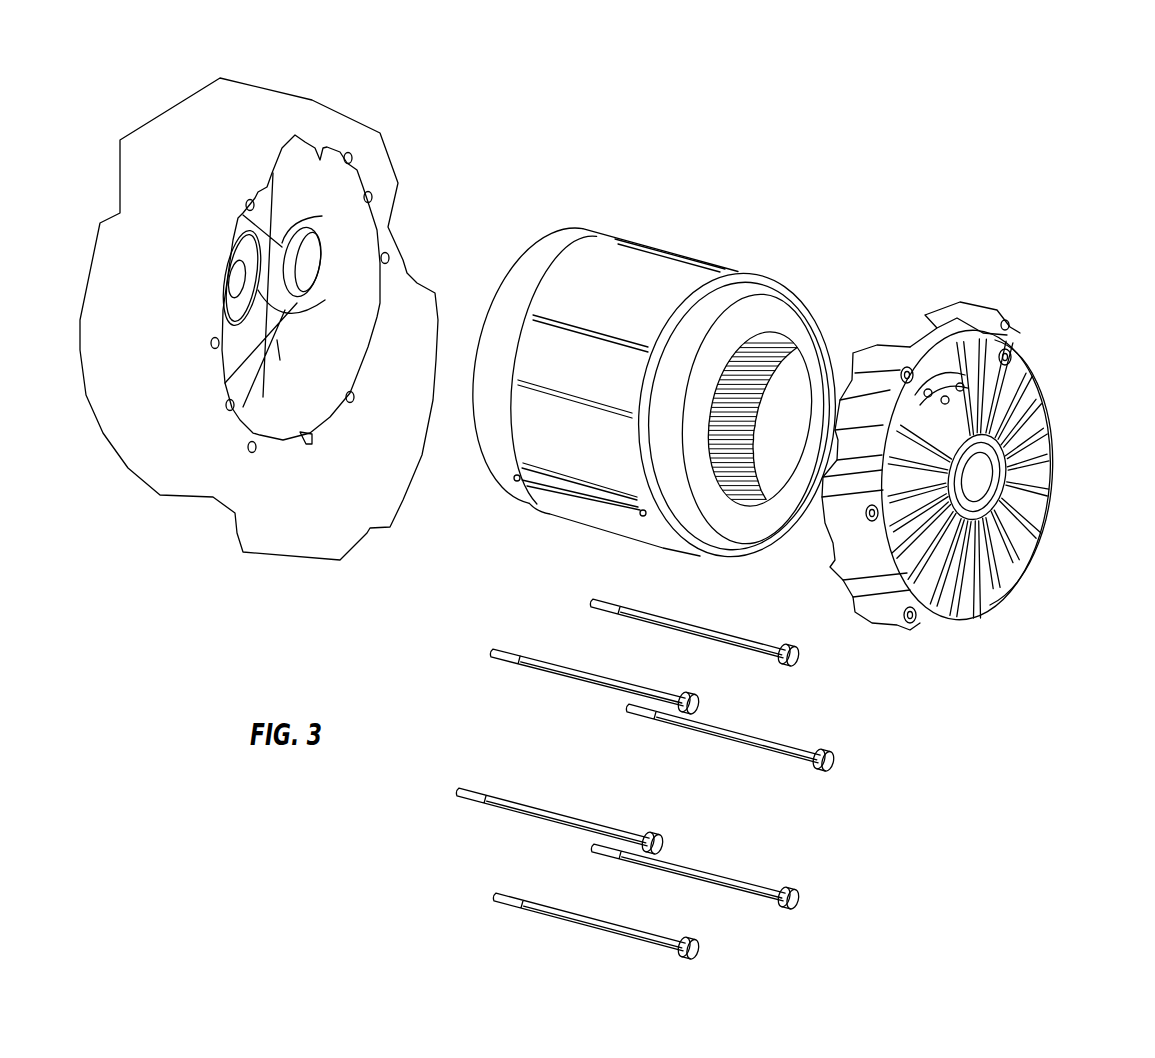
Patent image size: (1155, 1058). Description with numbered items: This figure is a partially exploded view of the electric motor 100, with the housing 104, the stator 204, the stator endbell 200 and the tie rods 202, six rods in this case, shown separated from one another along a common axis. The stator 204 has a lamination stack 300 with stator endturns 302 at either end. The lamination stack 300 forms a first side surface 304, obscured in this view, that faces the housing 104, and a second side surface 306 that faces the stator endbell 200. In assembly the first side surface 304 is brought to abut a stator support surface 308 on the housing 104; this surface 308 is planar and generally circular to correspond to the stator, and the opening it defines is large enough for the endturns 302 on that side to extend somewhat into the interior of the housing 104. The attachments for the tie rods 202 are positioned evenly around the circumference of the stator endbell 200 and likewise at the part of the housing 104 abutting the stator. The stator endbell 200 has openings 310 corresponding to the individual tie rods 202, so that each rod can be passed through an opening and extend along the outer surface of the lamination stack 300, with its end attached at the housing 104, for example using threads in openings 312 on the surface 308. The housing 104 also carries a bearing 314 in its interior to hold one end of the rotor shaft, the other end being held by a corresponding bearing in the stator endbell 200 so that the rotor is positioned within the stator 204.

The electric motor 100 is at (946, 172).
The housing 104 is at (250, 82).
The stator endbell 200 is at (1046, 478).
The tie rods 202 is at (680, 622).
The stator 204 is at (650, 237).
The lamination stack 300 is at (613, 297).
The stator endturns 302 is at (790, 295).
The first side surface 304 is at (520, 347).
The second side surface 306 is at (742, 270).
The stator support surface 308 is at (390, 235).
The openings 310 is at (989, 301).
The openings 312 is at (252, 432).
The bearing 314 is at (287, 313).